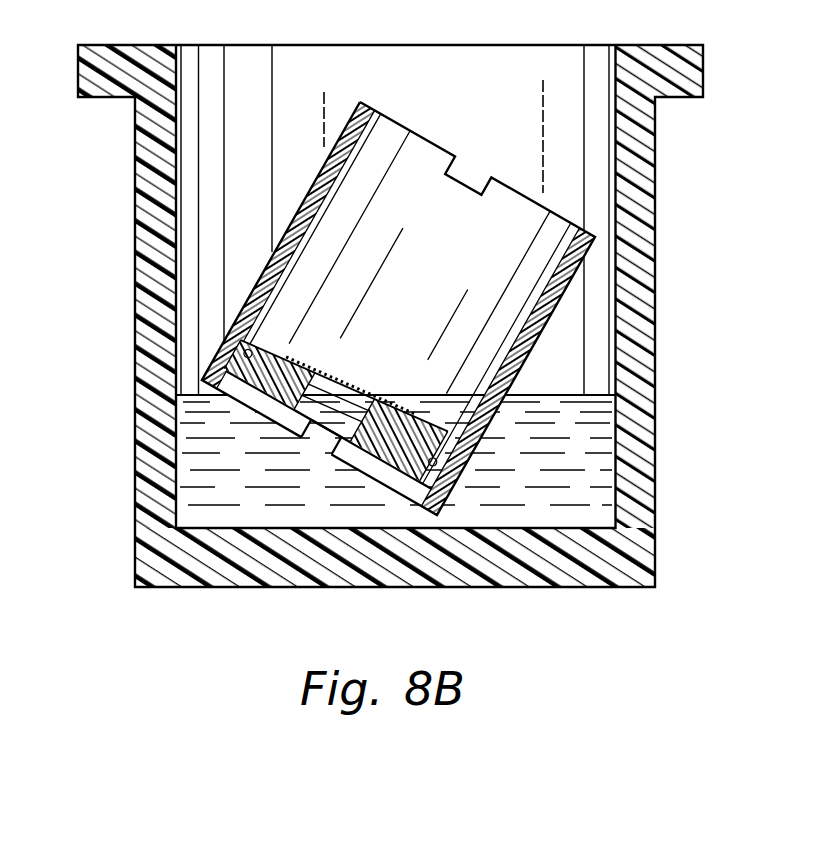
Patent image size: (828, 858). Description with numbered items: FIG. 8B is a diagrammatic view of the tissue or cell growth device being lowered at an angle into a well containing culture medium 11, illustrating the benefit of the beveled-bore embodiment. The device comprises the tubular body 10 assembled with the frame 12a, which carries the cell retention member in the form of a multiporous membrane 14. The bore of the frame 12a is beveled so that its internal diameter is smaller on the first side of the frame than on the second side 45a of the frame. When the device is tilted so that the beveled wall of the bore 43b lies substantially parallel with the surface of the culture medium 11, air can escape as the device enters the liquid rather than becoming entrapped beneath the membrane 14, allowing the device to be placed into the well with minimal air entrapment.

The tubular body 10 is at (560, 313).
The culture medium 11 is at (590, 393).
The frame 12a is at (285, 340).
The multiporous membrane 14 is at (352, 385).
The beveled wall of the bore 43b is at (360, 387).
The second side of the frame 45a is at (235, 395).